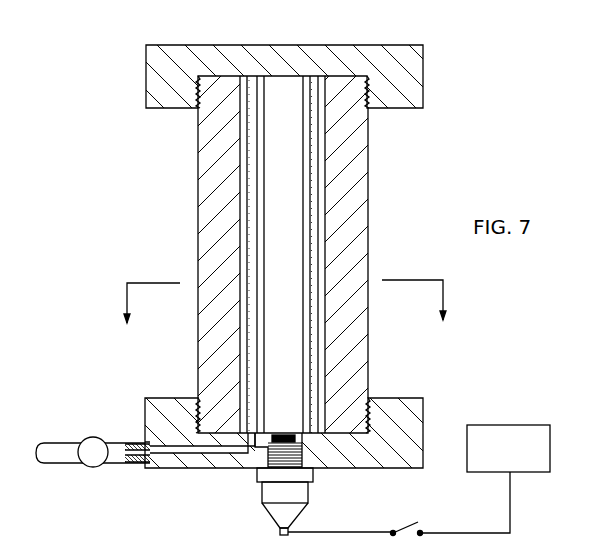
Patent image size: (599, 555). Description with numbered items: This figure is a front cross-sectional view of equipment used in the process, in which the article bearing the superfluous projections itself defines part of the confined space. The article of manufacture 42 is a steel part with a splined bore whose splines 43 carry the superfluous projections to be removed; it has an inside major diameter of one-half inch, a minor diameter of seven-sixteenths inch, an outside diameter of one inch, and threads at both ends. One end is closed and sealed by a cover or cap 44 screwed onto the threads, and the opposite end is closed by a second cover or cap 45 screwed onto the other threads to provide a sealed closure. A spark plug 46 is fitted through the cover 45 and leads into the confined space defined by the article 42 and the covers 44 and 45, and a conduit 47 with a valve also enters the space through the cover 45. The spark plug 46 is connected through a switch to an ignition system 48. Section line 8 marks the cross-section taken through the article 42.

The cover or cap 44 is at (333, 57).
The article of manufacture 42 is at (369, 258).
The splines 43 is at (307, 193).
The second cover or cap 45 is at (160, 398).
The spark plug 46 is at (278, 488).
The conduit 47 is at (58, 453).
The ignition system 48 is at (419, 480).
The section line 8- 8 is at (279, 318).